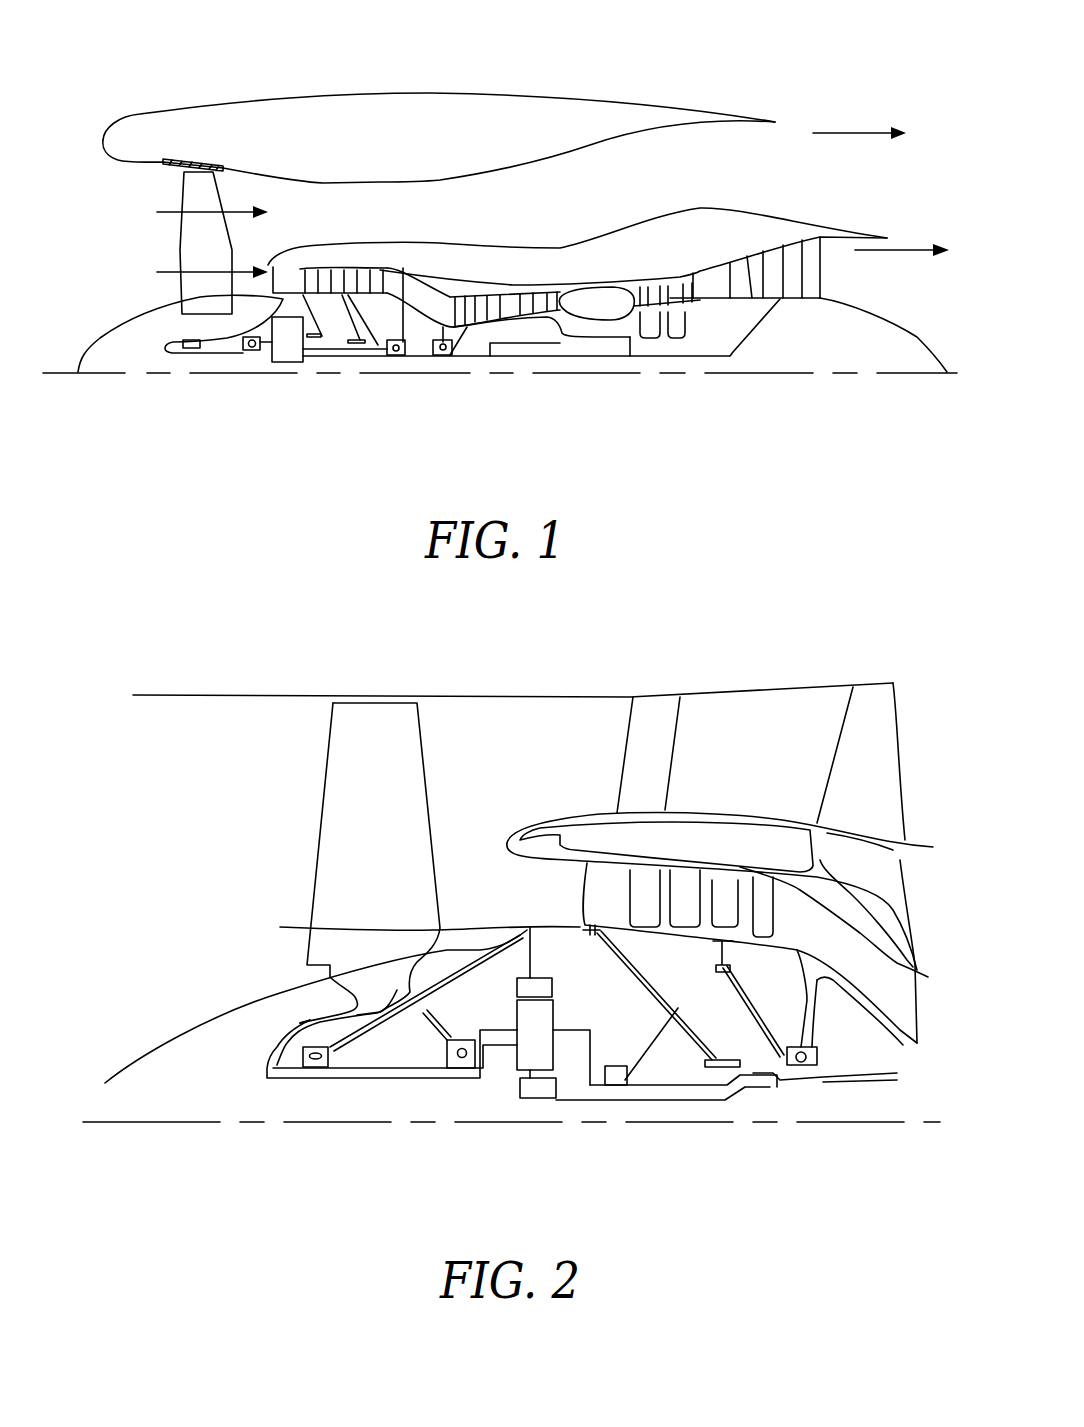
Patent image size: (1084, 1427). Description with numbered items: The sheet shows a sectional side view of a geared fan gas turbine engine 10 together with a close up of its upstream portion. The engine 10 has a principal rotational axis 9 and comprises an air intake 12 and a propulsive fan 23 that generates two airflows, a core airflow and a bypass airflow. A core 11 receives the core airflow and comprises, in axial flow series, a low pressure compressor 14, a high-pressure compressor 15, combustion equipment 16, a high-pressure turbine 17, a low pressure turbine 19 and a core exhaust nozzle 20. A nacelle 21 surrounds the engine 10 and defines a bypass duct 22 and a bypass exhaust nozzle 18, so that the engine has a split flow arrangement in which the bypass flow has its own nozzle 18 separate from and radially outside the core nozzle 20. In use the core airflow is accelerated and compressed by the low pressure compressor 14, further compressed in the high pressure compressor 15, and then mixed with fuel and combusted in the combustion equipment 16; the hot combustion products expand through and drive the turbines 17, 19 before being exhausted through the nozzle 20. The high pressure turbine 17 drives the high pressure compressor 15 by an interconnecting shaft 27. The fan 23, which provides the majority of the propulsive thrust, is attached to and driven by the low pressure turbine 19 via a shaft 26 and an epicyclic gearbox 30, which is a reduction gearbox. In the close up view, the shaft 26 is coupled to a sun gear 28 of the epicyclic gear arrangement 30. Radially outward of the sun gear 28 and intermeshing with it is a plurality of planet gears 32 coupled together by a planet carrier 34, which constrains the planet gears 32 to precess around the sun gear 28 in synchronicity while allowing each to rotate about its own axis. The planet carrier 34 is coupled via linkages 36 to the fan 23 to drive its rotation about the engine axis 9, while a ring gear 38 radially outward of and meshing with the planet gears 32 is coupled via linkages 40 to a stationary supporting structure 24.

In FIG. 1, the principal rotational axis 9 is at (828, 378).
In FIG. 2, the principal rotational axis 9 is at (200, 1127).
In FIG. 1, the gas turbine engine 10 is at (170, 101).
In FIG. 1, the core 11 is at (555, 268).
In FIG. 1, the air intake 12 is at (117, 177).
In FIG. 1, the low pressure compressor 14 is at (358, 273).
In FIG. 1, the high-pressure compressor 15 is at (513, 303).
In FIG. 1, the combustion equipment 16 is at (587, 305).
In FIG. 1, the high-pressure turbine 17 is at (653, 288).
In FIG. 1, the bypass exhaust nozzle 18 is at (774, 152).
In FIG. 1, the low pressure turbine 19 is at (792, 252).
In FIG. 1, the core exhaust nozzle 20 is at (848, 272).
In FIG. 1, the nacelle 21 is at (420, 107).
In FIG. 1, the bypass duct 22 is at (717, 176).
In FIG. 1, the propulsive fan 23 is at (185, 238).
In FIG. 2, the propulsive fan 23 is at (333, 813).
In FIG. 2, the stationary supporting structure 24 is at (545, 885).
In FIG. 1, the shaft 26 is at (503, 358).
In FIG. 2, the shaft 26 is at (667, 1103).
In FIG. 1, the interconnecting shaft 27 is at (543, 345).
In FIG. 2, the sun gear 28 is at (538, 1093).
In FIG. 1, the epicyclic gearbox 30 is at (283, 350).
In FIG. 2, the epicyclic gearbox 30 is at (525, 1067).
In FIG. 2, the planet gears 32 is at (515, 1077).
In FIG. 2, the planet carrier 34 is at (583, 1063).
In FIG. 2, the linkages 36 is at (483, 1085).
In FIG. 2, the ring gear 38 is at (447, 1005).
In FIG. 2, the linkages 40 is at (527, 974).